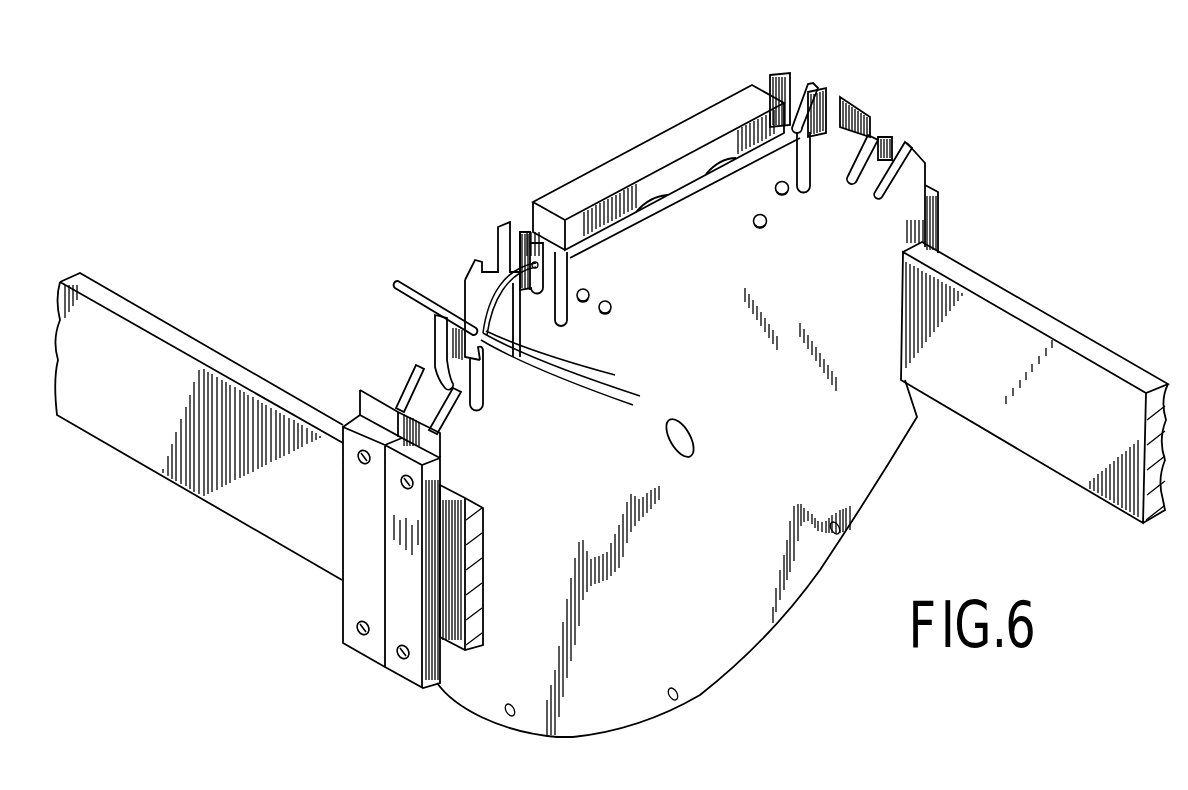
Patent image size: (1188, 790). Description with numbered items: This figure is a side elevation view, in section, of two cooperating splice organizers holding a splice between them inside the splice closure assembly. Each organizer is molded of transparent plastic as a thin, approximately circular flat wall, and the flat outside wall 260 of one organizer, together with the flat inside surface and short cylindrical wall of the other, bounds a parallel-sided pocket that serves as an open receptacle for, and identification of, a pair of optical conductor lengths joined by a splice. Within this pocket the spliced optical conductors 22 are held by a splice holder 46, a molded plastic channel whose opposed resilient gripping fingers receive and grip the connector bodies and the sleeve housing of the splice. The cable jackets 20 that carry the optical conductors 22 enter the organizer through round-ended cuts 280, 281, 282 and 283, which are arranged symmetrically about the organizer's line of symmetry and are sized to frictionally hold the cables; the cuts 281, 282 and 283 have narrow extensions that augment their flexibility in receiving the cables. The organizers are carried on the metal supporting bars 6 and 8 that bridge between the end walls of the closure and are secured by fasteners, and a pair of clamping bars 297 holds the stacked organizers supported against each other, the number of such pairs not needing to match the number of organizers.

The metal supporting bar 6 is at (145, 448).
The metal supporting bar 8 is at (1053, 367).
The cable jacket 20 is at (413, 291).
The optical conductor 22 is at (583, 393).
The splice holder 46 is at (665, 150).
The outside wall 260 is at (722, 647).
The round-ended cut 280 is at (527, 260).
The round-ended cut 281 is at (493, 260).
The round-ended cut 282 is at (457, 303).
The round-ended cut 283 is at (427, 360).
The clamping bar 297 is at (393, 660).